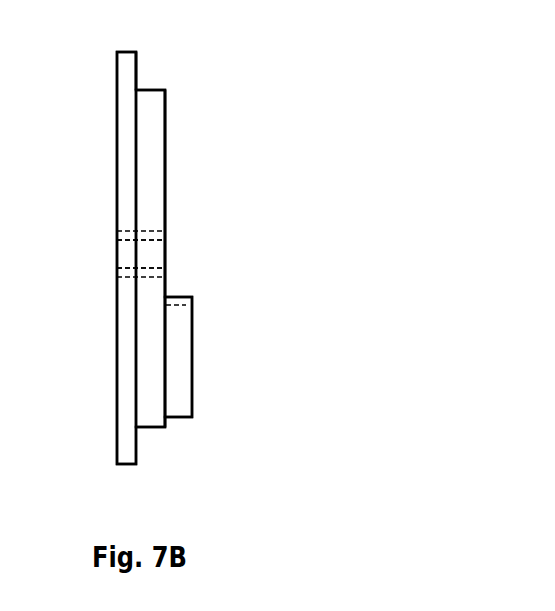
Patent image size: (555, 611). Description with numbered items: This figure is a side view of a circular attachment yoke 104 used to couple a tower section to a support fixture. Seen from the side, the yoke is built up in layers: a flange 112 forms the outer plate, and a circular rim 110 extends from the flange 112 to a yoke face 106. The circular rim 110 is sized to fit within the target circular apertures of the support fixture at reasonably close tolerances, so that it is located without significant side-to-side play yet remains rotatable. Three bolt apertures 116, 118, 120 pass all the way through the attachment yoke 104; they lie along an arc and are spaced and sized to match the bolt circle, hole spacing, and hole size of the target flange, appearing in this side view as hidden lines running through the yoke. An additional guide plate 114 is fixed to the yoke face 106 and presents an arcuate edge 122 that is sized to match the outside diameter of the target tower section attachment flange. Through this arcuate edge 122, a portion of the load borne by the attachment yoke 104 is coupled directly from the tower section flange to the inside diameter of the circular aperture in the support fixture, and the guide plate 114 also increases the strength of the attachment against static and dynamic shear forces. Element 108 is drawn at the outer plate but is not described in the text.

The circular attachment yoke 104 is at (41, 427).
The yoke face 106 is at (165, 182).
The base plate 108 is at (117, 147).
The circular rim 110 is at (138, 90).
The flange 112 is at (136, 62).
The guide plate 114 is at (193, 392).
The bolt aperture 116 is at (150, 230).
The bolt aperture 118 is at (202, 238).
The bolt aperture 120 is at (150, 241).
The arcuate edge 122 is at (183, 306).